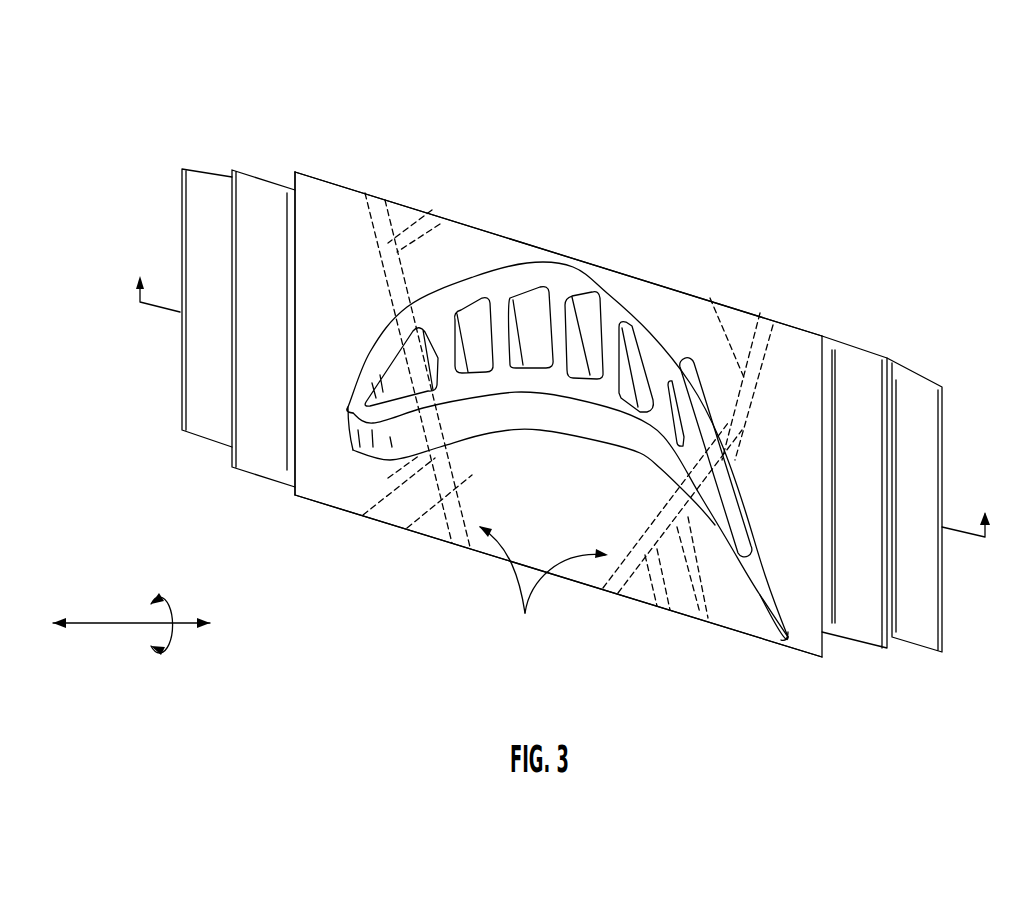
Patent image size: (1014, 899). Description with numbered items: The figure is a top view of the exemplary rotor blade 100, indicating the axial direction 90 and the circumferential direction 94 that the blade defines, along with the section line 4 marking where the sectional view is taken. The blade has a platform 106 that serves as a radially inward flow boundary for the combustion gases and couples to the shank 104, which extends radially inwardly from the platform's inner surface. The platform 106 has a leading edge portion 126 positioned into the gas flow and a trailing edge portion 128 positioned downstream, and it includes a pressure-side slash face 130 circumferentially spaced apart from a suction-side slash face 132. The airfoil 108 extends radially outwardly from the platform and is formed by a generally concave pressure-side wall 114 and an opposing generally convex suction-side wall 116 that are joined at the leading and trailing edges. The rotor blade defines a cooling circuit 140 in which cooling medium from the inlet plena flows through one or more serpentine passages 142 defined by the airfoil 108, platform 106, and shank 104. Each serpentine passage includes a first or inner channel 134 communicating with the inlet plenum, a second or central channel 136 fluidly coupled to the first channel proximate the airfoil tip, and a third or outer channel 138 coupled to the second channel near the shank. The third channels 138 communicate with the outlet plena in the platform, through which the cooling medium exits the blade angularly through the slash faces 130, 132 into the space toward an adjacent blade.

The rotor blade 100 is at (172, 117).
The shank 104 is at (263, 192).
The platform 106 is at (327, 195).
The airfoil 108 is at (605, 293).
The pressure-side wall 114 is at (495, 413).
The suction-side wall 116 is at (778, 590).
The leading edge portion 126 is at (290, 476).
The trailing edge portion 128 is at (823, 385).
The pressure-side slash face 130 is at (763, 640).
The suction-side slash face 132 is at (812, 330).
The first channel 134 is at (528, 302).
The second channel 136 is at (478, 333).
The third channel 138 is at (402, 378).
The cooling circuit 140 is at (543, 583).
The serpentine passage 142 is at (540, 320).
The axial direction 90 is at (90, 625).
The circumferential direction 94 is at (177, 612).
The section line 4- 4 is at (563, 389).